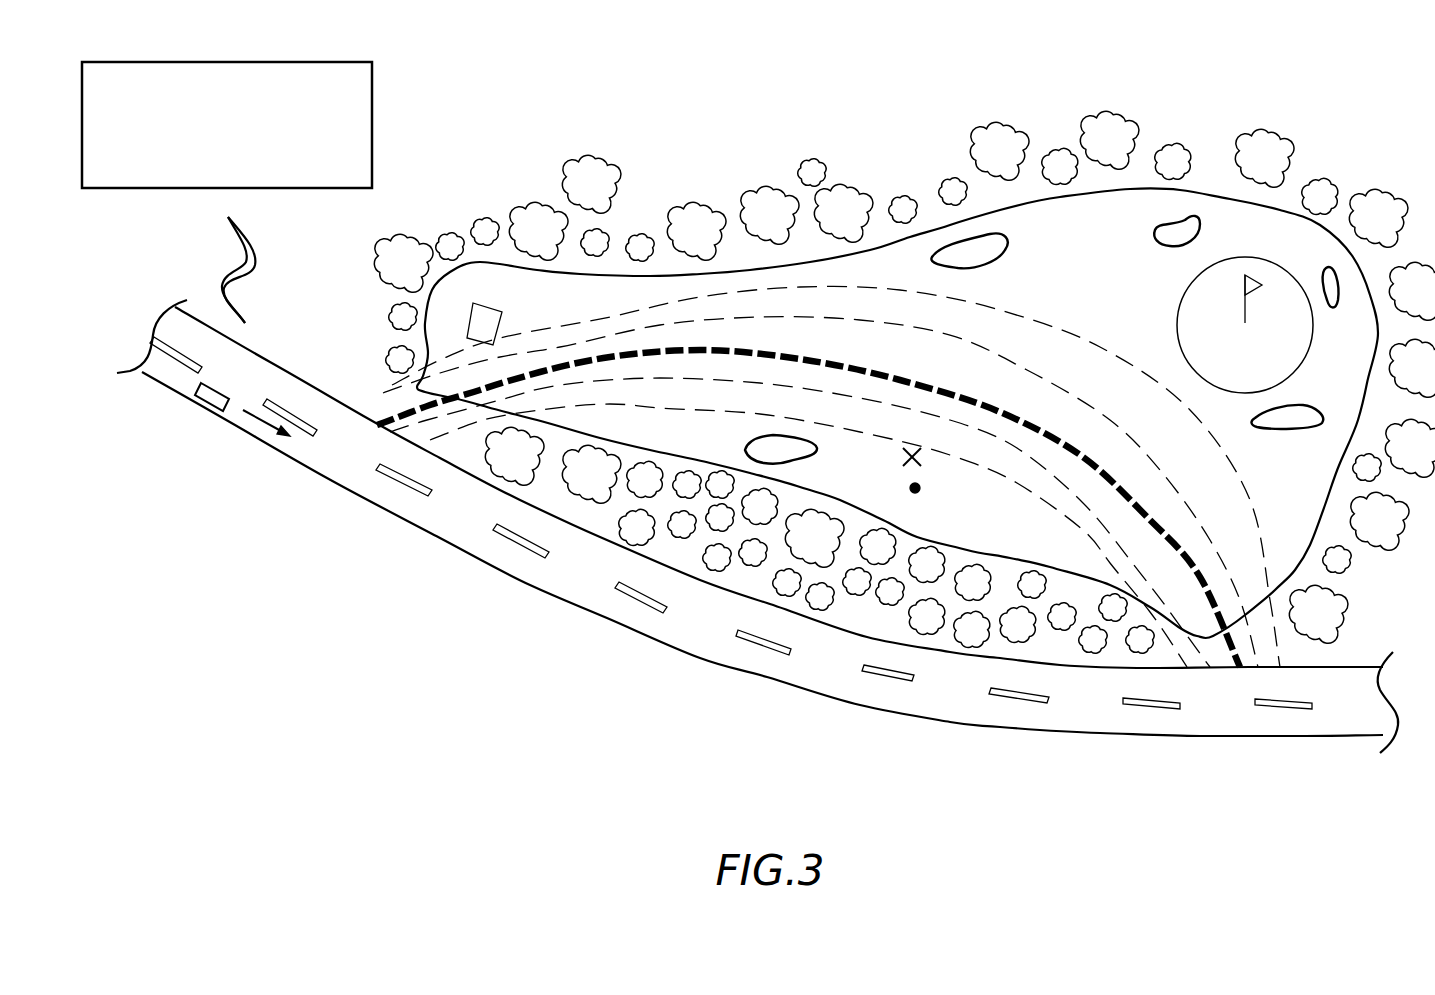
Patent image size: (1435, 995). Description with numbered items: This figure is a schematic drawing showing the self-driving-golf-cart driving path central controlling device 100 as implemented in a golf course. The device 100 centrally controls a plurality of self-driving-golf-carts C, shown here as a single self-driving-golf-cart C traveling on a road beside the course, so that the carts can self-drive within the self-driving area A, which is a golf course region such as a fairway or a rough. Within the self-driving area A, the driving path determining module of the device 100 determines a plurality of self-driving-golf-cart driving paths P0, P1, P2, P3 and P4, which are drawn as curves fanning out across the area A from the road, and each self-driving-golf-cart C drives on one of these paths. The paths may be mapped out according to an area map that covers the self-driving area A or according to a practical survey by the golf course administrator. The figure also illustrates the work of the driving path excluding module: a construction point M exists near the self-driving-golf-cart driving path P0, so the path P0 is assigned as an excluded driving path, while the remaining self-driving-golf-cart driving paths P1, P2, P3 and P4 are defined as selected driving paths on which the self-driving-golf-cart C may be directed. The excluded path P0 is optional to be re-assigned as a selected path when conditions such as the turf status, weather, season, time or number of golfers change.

The self-driving-golf-cart driving path central controlling device 100 is at (226, 63).
The self-driving area A is at (1202, 198).
The self-driving-golf-cart C is at (207, 405).
The self-driving-golf-cart driving path P0 is at (435, 438).
The self-driving-golf-cart driving path P1 is at (415, 427).
The self-driving-golf-cart driving path P2 is at (385, 430).
The self-driving-golf-cart driving path P3 is at (374, 410).
The self-driving-golf-cart driving path P4 is at (382, 405).
The construction point M is at (915, 488).